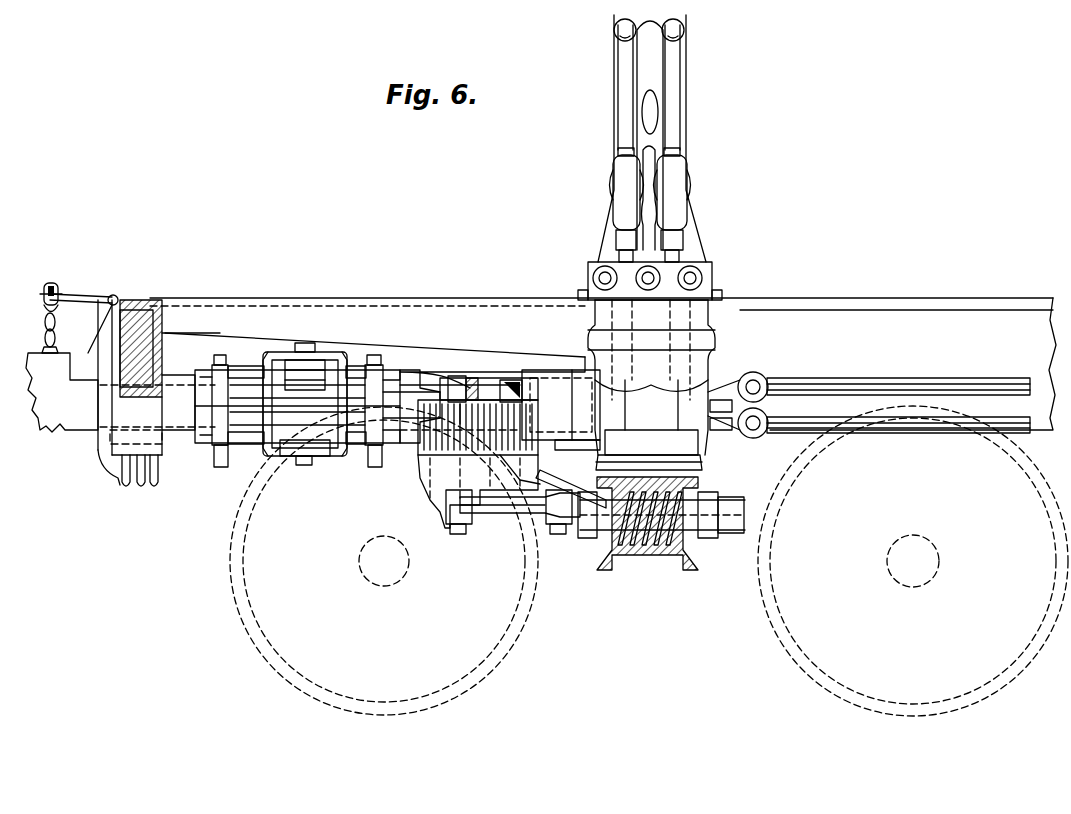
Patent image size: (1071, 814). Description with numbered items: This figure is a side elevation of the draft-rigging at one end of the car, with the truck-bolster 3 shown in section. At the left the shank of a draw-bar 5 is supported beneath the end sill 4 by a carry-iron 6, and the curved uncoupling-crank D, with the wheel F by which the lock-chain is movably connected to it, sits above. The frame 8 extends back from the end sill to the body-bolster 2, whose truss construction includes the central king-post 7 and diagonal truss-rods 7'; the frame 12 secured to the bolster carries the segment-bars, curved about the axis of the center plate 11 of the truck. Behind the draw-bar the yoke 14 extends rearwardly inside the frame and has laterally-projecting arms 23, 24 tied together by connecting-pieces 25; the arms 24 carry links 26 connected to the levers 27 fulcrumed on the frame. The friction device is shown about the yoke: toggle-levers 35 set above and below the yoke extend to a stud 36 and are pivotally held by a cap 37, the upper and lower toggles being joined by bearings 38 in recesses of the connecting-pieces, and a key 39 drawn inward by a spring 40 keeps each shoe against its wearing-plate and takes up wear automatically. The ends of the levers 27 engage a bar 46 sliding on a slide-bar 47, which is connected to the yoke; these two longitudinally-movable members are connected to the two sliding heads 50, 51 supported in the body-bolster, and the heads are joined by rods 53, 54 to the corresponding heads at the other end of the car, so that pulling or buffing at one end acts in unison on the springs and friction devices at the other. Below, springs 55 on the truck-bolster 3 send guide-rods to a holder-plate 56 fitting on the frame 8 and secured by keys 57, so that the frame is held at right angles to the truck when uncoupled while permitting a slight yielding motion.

The wheel F is at (44, 288).
The uncoupling-crank D is at (44, 300).
The body-bolster 2 is at (682, 370).
The truck-bolster 3 is at (690, 480).
The end sill 4 is at (104, 318).
The shank of a draw-bar 5 is at (62, 392).
The carry-iron 6 is at (122, 470).
The king-post 7 is at (650, 160).
The diagonal truss-rods 7' is at (655, 138).
The frame 8 is at (578, 364).
The center plate 11 is at (610, 462).
The frame 12 is at (560, 452).
The yoke 14 is at (256, 366).
The arms 23 is at (218, 356).
The arms 24 is at (384, 378).
The connecting-pieces 25 is at (297, 406).
The links 26 is at (430, 422).
The levers 27 is at (456, 376).
The toggle-levers 35 is at (344, 362).
The stud 36 is at (305, 343).
The cap 37 is at (300, 366).
The bearings 38 is at (500, 442).
The key 39 is at (318, 358).
The spring 40 is at (304, 466).
The bar 46 is at (508, 404).
The slide-bar 47 is at (512, 402).
The sliding head 50 is at (746, 376).
The sliding head 51 is at (750, 440).
The rod 53 is at (898, 373).
The rod 54 is at (886, 434).
The springs 55 is at (652, 540).
The holder-plate 56 is at (560, 478).
The key 57 is at (428, 480).